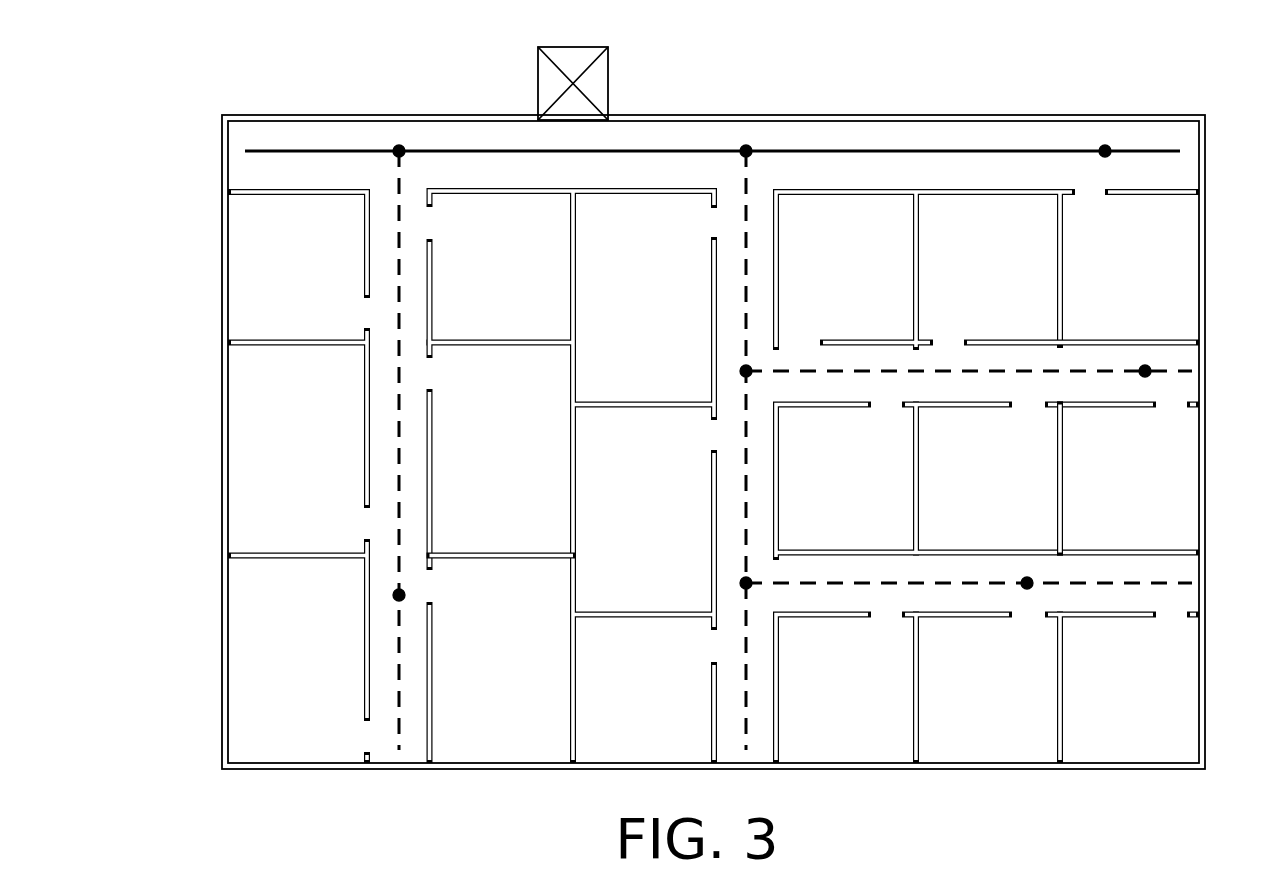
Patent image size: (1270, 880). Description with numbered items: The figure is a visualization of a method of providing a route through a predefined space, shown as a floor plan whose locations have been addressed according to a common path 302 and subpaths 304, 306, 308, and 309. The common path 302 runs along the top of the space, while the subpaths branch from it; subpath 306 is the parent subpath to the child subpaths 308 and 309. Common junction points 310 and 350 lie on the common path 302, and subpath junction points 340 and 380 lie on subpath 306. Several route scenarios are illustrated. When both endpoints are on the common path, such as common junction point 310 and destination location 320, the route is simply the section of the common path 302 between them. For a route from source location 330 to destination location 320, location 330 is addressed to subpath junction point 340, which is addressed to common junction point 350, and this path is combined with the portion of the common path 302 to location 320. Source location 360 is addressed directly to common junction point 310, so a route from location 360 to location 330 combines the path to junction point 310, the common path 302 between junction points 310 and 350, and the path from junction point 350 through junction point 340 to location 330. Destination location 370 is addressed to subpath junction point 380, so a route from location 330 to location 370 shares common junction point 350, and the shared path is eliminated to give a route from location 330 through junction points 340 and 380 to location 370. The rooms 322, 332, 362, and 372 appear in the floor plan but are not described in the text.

The common path 302 is at (305, 151).
The subpath 304 is at (400, 264).
The subpath 306 is at (747, 264).
The subpath 308 is at (995, 371).
The subpath 309 is at (868, 583).
The common junction point 310 is at (400, 151).
The destination location 320 is at (1106, 151).
The room 322 is at (1139, 252).
The source location 330 is at (1146, 371).
The room 332 is at (1139, 474).
The subpath junction point 340 is at (746, 370).
The common junction point 350 is at (747, 151).
The source location 360 is at (398, 597).
The room 362 is at (499, 696).
The destination location 370 is at (1026, 583).
The room 372 is at (992, 701).
The subpath junction point 380 is at (746, 582).